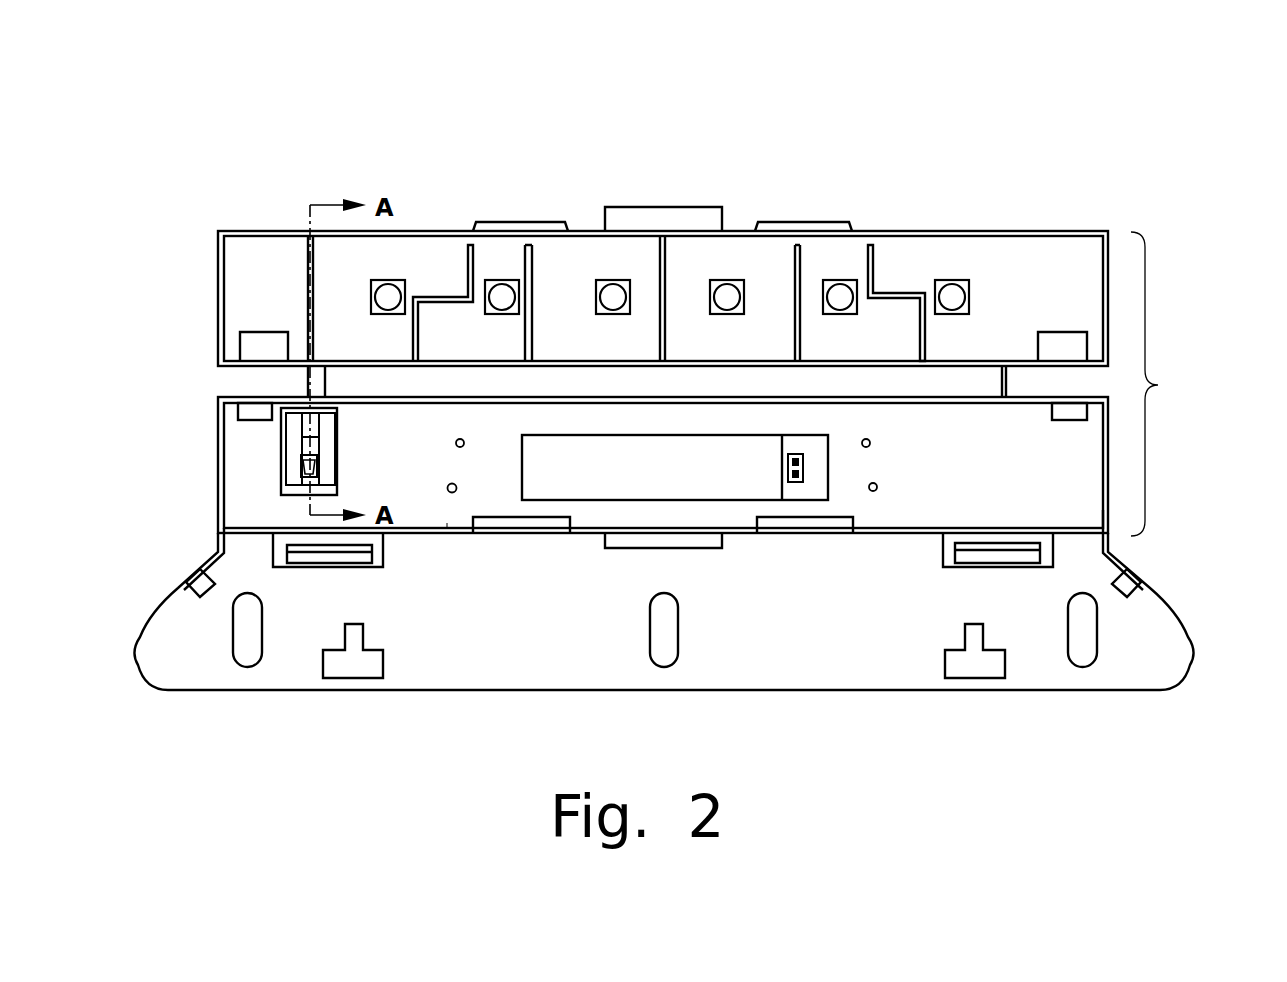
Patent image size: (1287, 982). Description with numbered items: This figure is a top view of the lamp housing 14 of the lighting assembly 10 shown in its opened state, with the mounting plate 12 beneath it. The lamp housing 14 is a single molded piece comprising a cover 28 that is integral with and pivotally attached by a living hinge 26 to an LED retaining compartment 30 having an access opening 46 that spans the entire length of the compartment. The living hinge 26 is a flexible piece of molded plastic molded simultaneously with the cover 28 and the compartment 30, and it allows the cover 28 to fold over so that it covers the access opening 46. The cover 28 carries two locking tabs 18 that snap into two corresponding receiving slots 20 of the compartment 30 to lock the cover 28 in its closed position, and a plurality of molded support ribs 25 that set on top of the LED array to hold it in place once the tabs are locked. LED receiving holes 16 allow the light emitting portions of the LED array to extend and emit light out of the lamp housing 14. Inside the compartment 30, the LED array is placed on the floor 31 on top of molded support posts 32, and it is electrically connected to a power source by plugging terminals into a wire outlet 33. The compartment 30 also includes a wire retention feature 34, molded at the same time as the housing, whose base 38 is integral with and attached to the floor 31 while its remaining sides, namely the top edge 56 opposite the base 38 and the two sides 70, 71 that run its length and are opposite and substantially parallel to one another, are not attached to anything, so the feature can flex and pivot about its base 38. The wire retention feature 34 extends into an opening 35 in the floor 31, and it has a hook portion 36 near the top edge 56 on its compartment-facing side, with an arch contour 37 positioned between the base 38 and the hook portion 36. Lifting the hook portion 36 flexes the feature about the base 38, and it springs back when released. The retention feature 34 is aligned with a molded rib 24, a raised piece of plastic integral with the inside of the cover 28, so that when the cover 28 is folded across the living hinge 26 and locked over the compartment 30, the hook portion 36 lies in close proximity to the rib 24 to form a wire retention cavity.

The lighting assembly 10 is at (1181, 152).
The mounting plate 12 is at (408, 680).
The lamp housing 14 is at (1165, 384).
The LED receiving holes 16 is at (957, 281).
The locking tabs 18 is at (510, 221).
The receiving slots 20 is at (520, 523).
The molded rib 24 is at (306, 258).
The molded support ribs 25 is at (418, 353).
The living hinge 26 is at (308, 387).
The cover 28 is at (240, 266).
The LED retaining compartment 30 is at (238, 468).
The floor 31 is at (1078, 510).
The molded support posts 32 is at (457, 487).
The wire outlet 33 is at (804, 466).
The wire retention feature 34 is at (314, 418).
The opening 35 is at (286, 474).
The hook portion 36 is at (320, 474).
The arch contour 37 is at (314, 446).
The base 38 is at (284, 413).
The access opening 46 is at (446, 535).
The top edge 56 is at (294, 484).
The side 70 is at (283, 444).
The side 71 is at (318, 459).